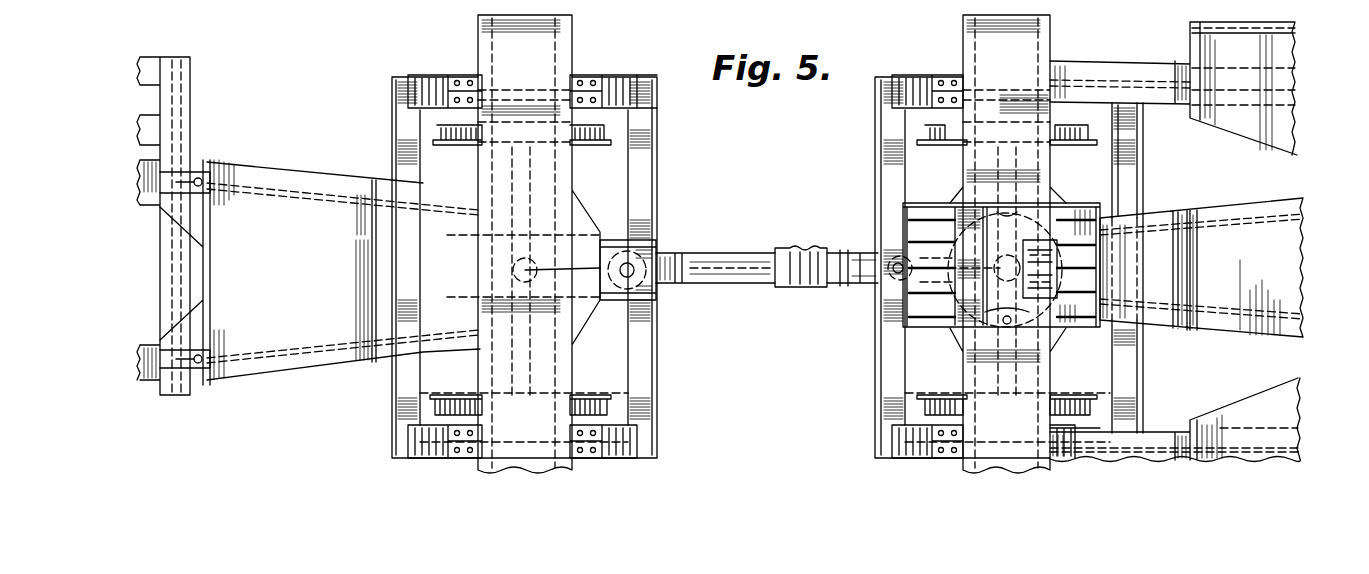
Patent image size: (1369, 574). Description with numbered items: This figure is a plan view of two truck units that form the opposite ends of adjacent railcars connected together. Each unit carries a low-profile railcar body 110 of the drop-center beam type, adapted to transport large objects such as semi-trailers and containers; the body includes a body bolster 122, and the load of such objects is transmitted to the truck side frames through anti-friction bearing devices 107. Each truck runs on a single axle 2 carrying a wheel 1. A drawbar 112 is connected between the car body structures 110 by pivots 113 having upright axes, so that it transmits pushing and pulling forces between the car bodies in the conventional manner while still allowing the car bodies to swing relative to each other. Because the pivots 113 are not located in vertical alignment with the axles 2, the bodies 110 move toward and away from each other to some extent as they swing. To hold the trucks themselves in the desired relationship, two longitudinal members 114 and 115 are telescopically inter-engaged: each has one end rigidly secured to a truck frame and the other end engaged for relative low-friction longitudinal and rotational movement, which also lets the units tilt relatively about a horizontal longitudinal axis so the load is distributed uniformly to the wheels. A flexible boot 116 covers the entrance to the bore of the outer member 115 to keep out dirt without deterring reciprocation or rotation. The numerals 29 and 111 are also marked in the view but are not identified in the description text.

The wheel 1 is at (586, 140).
The axle 2 is at (500, 163).
The pivot pin 29 is at (500, 262).
The anti-friction bearing device 107 is at (440, 84).
The railcar body 110 is at (590, 63).
The side plate 111 is at (640, 72).
The drawbar 112 is at (681, 264).
The pivot 113 is at (631, 265).
The longitudinal member 114 is at (836, 283).
The longitudinal member 115 is at (725, 255).
The flexible boot 116 is at (794, 250).
The body bolster 122 is at (392, 134).